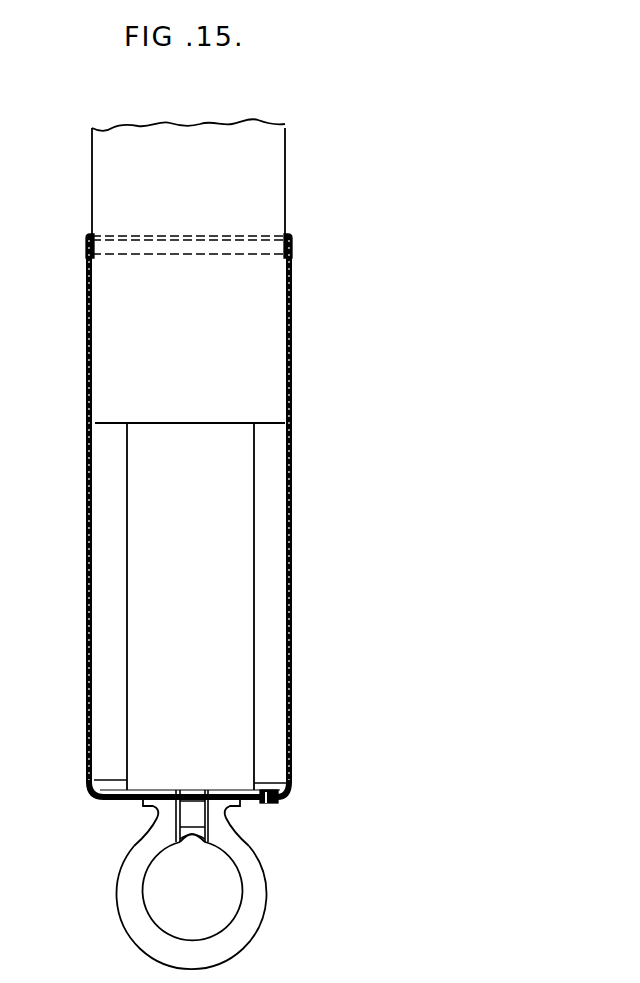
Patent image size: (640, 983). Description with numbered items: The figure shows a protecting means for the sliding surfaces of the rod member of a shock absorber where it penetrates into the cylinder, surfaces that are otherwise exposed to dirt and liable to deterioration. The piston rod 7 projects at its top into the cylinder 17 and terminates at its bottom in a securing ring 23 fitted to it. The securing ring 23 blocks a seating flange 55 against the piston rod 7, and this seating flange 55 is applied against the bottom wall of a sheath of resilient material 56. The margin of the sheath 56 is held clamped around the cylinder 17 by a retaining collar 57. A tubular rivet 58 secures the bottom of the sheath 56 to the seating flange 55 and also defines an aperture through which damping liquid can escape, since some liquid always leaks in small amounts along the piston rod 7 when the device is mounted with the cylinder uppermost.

The piston rod 7 is at (235, 685).
The cylinder 17 is at (250, 390).
The securing ring 23 is at (255, 887).
The seating flange 55 is at (110, 790).
The sheath of resilient material 56 is at (292, 572).
The retaining collar 57 is at (293, 246).
The tubular rivet 58 is at (262, 781).